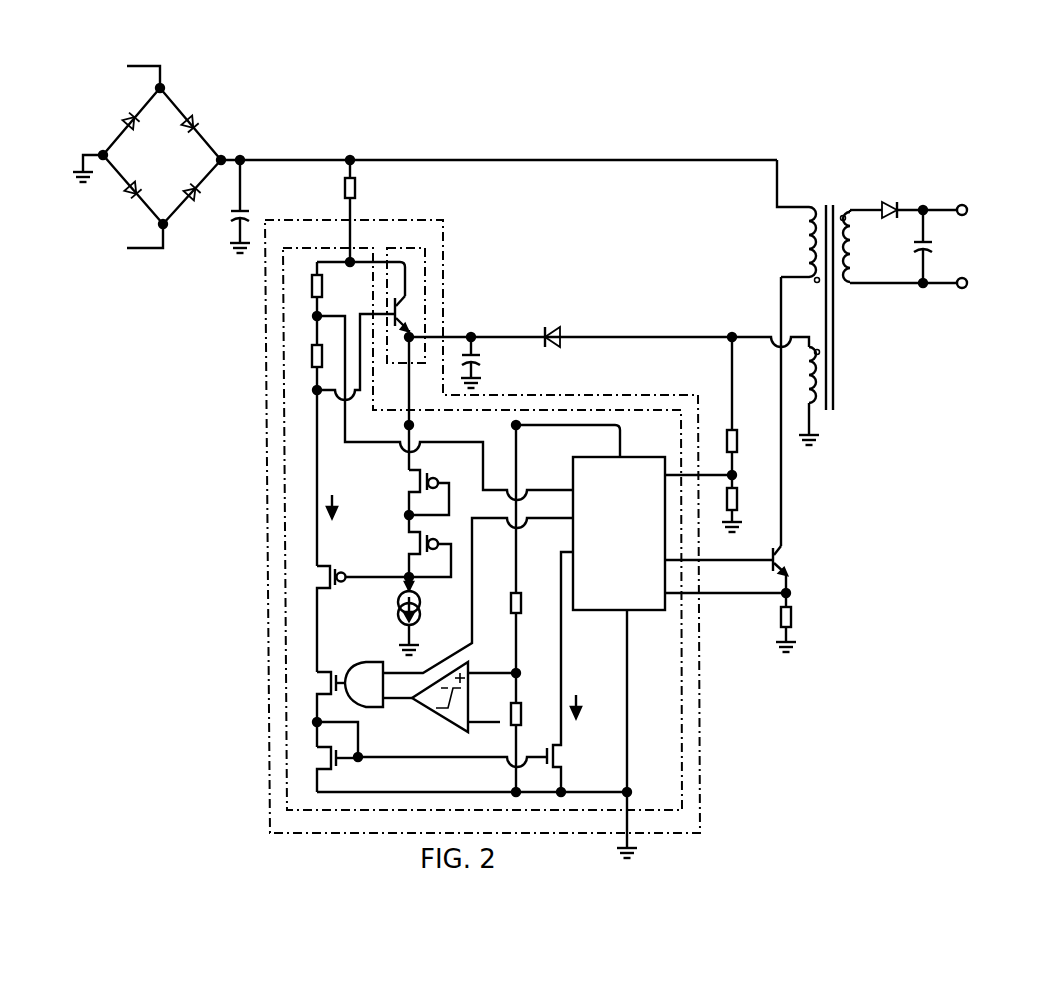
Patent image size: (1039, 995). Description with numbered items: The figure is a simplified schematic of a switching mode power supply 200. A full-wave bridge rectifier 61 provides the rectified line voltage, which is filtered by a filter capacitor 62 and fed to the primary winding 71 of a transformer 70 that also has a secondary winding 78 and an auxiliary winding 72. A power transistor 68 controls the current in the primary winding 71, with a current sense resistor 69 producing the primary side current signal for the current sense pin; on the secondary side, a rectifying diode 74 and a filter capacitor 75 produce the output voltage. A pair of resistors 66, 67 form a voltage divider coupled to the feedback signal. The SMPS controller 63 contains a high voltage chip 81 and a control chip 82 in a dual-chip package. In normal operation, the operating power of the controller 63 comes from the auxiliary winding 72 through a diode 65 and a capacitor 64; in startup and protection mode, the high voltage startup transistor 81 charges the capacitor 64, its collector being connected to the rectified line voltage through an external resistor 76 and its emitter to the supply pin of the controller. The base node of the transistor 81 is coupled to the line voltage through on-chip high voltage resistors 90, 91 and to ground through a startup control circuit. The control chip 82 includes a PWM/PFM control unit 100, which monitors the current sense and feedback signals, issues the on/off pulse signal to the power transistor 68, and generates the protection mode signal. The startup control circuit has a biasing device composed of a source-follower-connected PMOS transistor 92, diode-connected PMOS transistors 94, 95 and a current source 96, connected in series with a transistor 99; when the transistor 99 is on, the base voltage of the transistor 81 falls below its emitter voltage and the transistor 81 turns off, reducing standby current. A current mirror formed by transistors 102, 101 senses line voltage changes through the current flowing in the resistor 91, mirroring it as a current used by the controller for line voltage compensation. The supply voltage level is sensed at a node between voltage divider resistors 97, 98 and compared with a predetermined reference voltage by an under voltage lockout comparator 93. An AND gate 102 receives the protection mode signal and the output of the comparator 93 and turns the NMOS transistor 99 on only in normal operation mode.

The full-wave bridge rectifier 61 is at (169, 164).
The filter capacitor 62 is at (232, 222).
The SMPS controller 63 is at (452, 247).
The capacitor 64 is at (484, 357).
The diode 65 is at (565, 327).
The resistor 66 is at (740, 443).
The resistor 67 is at (741, 516).
The power transistor 68 is at (790, 560).
The current sense resistor 69 is at (800, 614).
The transformer 70 is at (830, 197).
The primary winding 71 is at (806, 241).
The auxiliary winding 72 is at (809, 378).
The rectifying diode 74 is at (888, 194).
The filter capacitor 75 is at (919, 252).
The external resistor 76 is at (337, 195).
The secondary winding 78 is at (859, 244).
The high voltage startup transistor 81 is at (411, 248).
The control chip 82 is at (320, 248).
The high voltage resistor 90 is at (307, 287).
The high voltage resistor 91 is at (310, 355).
The PMOS transistor 92 is at (317, 574).
The under voltage lockout comparator 93 is at (472, 665).
The PMOS transistor 94 is at (408, 492).
The PMOS transistor 95 is at (416, 549).
The current source 96 is at (422, 616).
The voltage divider resistor 97 is at (509, 604).
The voltage divider resistor 98 is at (528, 720).
The transistor 99 is at (318, 680).
The PWM/PFM control unit 100 is at (630, 448).
The transistor 101 is at (565, 757).
The transistor / AND gate 102 is at (366, 662).
The switching mode power supply 200 is at (548, 122).